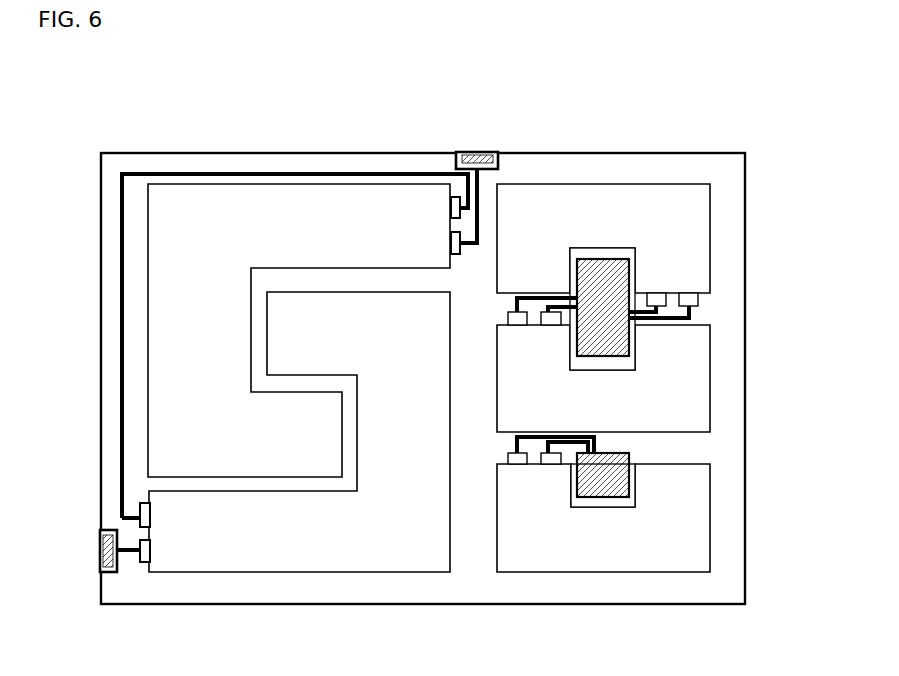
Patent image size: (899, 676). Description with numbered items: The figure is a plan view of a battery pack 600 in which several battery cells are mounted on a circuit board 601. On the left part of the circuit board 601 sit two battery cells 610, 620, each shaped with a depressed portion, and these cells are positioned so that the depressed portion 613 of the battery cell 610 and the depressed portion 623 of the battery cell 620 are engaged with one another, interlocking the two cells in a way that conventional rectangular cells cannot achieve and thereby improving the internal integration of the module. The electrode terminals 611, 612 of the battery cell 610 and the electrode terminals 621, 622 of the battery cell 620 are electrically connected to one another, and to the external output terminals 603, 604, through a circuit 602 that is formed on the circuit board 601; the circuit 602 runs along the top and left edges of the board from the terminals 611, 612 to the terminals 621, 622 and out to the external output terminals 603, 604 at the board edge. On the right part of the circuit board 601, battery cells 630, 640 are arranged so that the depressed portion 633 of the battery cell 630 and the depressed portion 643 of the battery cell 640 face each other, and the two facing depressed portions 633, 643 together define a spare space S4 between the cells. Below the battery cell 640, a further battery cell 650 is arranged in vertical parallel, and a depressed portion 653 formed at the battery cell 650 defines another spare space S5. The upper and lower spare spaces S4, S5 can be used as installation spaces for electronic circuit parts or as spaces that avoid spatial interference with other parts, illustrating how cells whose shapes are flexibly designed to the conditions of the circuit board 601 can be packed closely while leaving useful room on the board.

The battery pack 600 is at (88, 129).
The circuit board 601 is at (735, 582).
The circuit 602 is at (122, 198).
The external output terminal 603 is at (478, 152).
The external output terminal 604 is at (100, 550).
The battery cell 610 is at (185, 263).
The electrode terminal 611 is at (451, 207).
The electrode terminal 612 is at (451, 242).
The depressed portion 613 is at (240, 327).
The battery cell 620 is at (310, 550).
The electrode terminal 621 is at (150, 549).
The electrode terminal 622 is at (150, 517).
The depressed portion 623 is at (415, 605).
The battery cell 630 is at (694, 199).
The depressed portion 633 is at (593, 243).
The battery cell 640 is at (694, 392).
The depressed portion 643 is at (603, 375).
The battery cell 650 is at (694, 522).
The depressed portion 653 is at (603, 513).
The spare space S4 is at (680, 309).
The spare space S5 is at (680, 495).